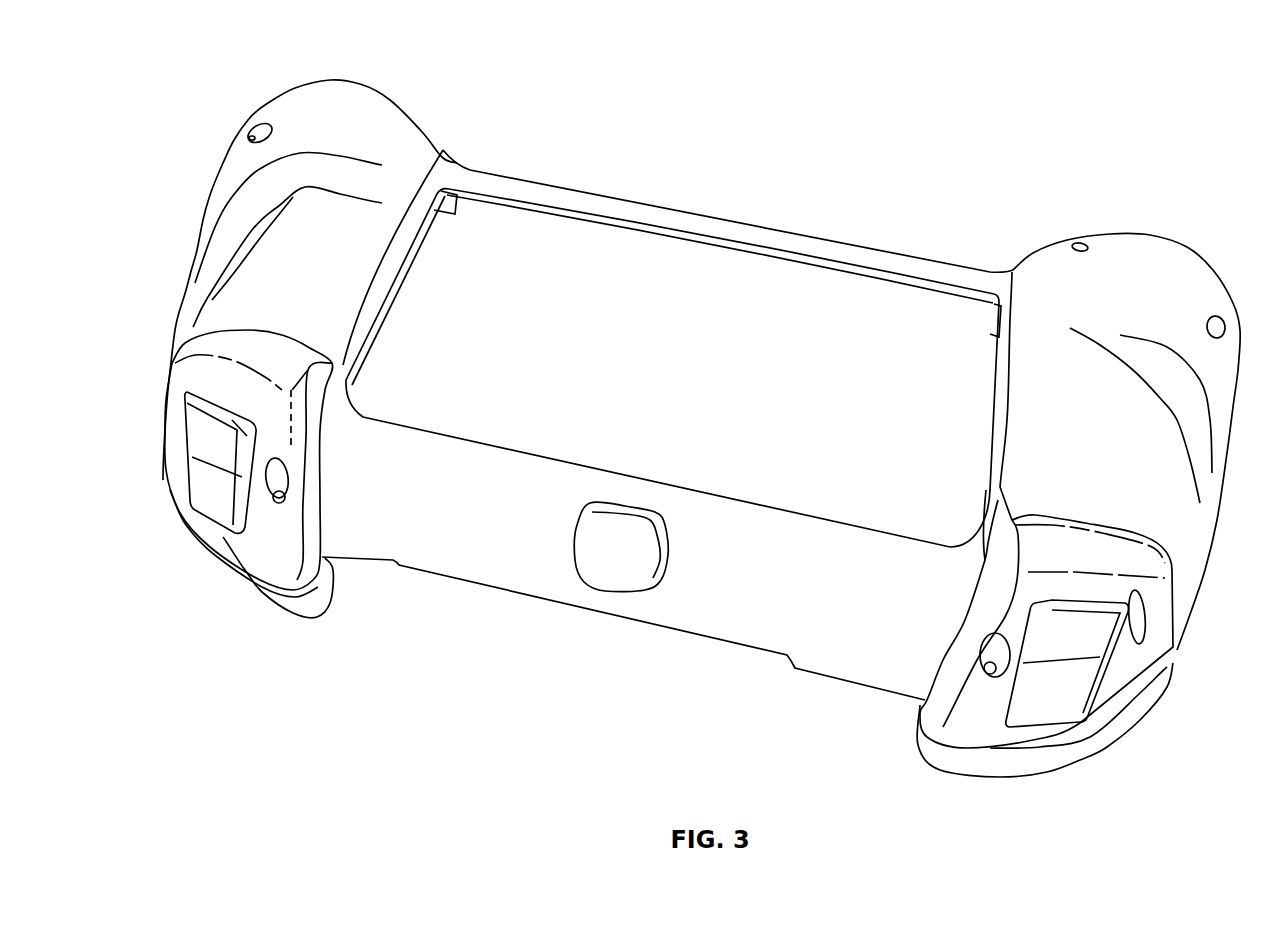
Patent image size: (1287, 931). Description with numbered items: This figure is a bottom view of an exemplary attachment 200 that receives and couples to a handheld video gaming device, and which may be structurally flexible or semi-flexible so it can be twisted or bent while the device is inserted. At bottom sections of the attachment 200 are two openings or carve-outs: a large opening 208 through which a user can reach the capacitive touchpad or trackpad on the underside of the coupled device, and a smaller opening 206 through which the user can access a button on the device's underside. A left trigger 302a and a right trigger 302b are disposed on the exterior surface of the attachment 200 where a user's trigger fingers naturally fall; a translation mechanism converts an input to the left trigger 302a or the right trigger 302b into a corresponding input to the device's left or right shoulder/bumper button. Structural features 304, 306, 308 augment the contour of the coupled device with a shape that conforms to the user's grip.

The attachment 200 is at (1190, 100).
The opening 206 is at (625, 592).
The opening 208 is at (725, 240).
The left trigger 302a is at (210, 505).
The right trigger 302b is at (1070, 713).
The structural feature 304 is at (313, 100).
The structural feature 306 is at (198, 380).
The structural feature 308 is at (260, 590).